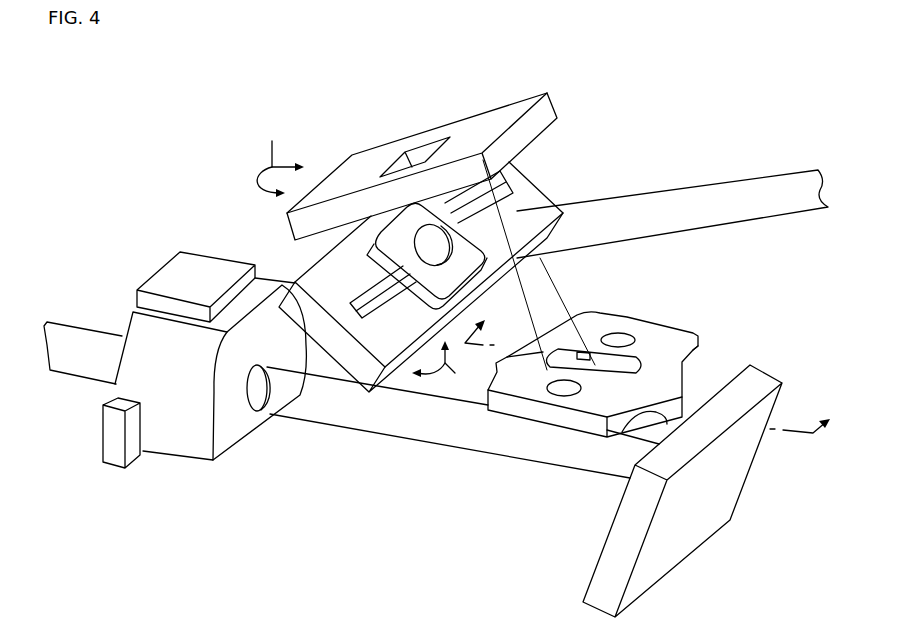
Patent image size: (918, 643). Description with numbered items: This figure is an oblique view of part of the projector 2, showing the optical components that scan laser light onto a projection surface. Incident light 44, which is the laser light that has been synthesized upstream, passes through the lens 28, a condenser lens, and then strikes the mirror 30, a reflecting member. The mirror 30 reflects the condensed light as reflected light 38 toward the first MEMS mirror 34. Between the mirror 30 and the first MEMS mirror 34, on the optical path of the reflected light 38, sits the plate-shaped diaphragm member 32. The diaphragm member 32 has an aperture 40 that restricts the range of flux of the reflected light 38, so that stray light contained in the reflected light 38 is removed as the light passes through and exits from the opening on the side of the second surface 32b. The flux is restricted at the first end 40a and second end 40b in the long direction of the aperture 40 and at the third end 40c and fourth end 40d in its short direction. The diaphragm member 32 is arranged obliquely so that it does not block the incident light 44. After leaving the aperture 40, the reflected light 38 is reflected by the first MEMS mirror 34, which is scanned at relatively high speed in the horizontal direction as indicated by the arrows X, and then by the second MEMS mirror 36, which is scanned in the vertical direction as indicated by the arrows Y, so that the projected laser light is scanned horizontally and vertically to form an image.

The projector 2 is at (699, 101).
The lens 28 is at (183, 445).
The mirror 30 is at (680, 545).
The diaphragm member 32 is at (615, 381).
The second surface 32b is at (628, 331).
The first MEMS mirror 34 is at (486, 127).
The second MEMS mirror 36 is at (545, 180).
The reflected light 38 is at (541, 293).
The aperture 40 is at (597, 342).
The first end 40a is at (699, 350).
The second end 40b is at (523, 393).
The third end 40c is at (582, 410).
The fourth end 40d is at (578, 347).
The incident light 44 is at (418, 430).